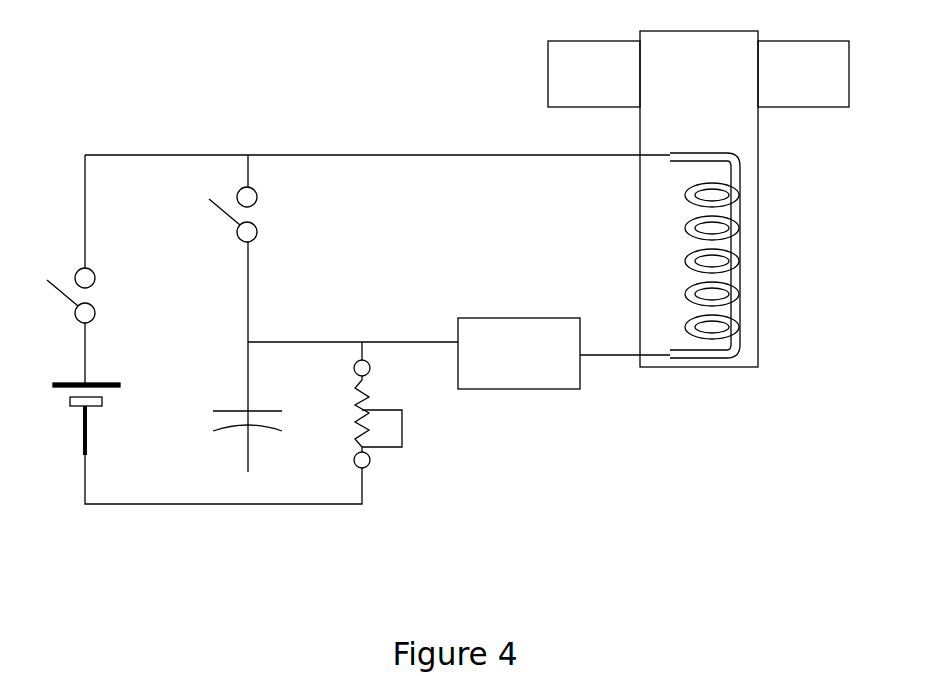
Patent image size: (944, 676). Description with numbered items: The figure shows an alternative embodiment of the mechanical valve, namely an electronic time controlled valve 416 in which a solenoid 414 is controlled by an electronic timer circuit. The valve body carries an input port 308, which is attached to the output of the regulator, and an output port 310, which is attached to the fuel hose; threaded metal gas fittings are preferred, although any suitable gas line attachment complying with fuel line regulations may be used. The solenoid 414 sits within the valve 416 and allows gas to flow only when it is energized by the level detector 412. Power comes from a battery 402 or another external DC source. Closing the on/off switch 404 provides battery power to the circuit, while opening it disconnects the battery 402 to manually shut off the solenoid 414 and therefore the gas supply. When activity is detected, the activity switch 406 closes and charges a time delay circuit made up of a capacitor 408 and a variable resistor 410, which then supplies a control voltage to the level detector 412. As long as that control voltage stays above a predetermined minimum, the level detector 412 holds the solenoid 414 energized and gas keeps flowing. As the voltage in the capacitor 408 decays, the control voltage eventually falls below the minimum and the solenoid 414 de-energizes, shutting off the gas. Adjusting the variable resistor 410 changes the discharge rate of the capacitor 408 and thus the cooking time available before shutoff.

The input port 308 is at (573, 80).
The output port 310 is at (832, 80).
The battery 402 is at (102, 406).
The on/off switch 404 is at (83, 268).
The activity switch 406 is at (253, 193).
The capacitor 408 is at (227, 402).
The variable resistor 410 is at (395, 423).
The level detector 412 is at (517, 325).
The solenoid 414 is at (727, 308).
The electronic time controlled valve 416 is at (747, 125).